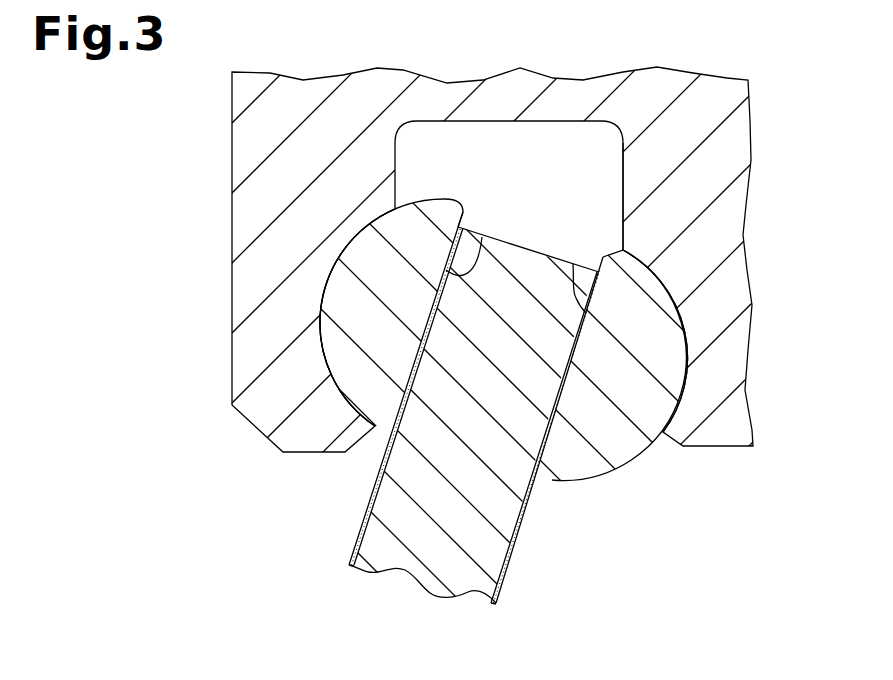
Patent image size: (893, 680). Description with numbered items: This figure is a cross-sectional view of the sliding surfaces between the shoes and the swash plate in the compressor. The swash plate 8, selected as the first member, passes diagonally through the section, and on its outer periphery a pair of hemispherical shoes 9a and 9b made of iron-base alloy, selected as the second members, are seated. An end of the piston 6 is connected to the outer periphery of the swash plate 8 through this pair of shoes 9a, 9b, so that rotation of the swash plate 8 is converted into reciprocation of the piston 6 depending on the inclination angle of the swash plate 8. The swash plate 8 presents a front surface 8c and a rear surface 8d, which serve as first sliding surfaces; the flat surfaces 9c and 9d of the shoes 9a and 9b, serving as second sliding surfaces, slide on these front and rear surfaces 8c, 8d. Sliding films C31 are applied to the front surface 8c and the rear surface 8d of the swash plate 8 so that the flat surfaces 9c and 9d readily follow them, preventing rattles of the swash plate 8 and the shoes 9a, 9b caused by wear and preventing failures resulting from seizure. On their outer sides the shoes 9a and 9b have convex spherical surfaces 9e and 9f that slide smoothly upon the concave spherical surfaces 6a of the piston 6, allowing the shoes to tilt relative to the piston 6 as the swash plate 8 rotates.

The piston 6 is at (738, 130).
The concave spherical surfaces 6a is at (326, 290).
The swash plate 8 is at (437, 550).
The front surface 8c is at (363, 522).
The rear surface 8d is at (507, 563).
The hemispherical shoe 9a is at (418, 232).
The hemispherical shoe 9b is at (618, 278).
The flat surface 9c is at (482, 236).
The flat surface 9d is at (574, 264).
The convex spherical surface 9e is at (367, 220).
The convex spherical surface 9f is at (664, 292).
The sliding film C31 is at (380, 468).